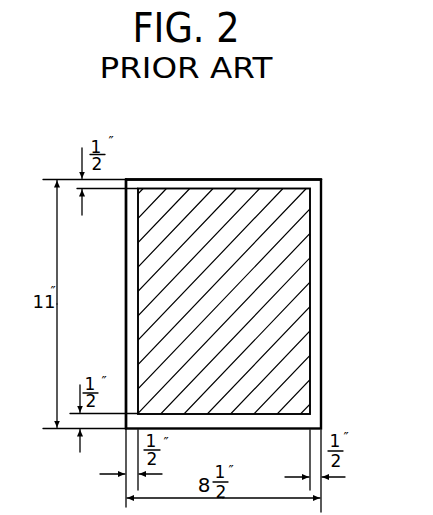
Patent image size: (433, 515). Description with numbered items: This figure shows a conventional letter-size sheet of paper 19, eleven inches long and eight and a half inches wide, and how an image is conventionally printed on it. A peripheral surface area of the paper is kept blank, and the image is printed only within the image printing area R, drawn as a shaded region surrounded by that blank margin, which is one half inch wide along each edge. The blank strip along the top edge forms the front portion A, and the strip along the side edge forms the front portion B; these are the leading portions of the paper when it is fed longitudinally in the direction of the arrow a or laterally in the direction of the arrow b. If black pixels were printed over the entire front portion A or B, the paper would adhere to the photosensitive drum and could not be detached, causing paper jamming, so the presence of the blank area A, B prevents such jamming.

The sheet of paper 19 is at (326, 183).
The front portion A is at (288, 180).
The front portion B is at (126, 338).
The image printing area R is at (216, 302).
The arrow indicating longitudinal paper feeding direction a is at (344, 241).
The arrow indicating lateral paper feeding direction b is at (194, 158).